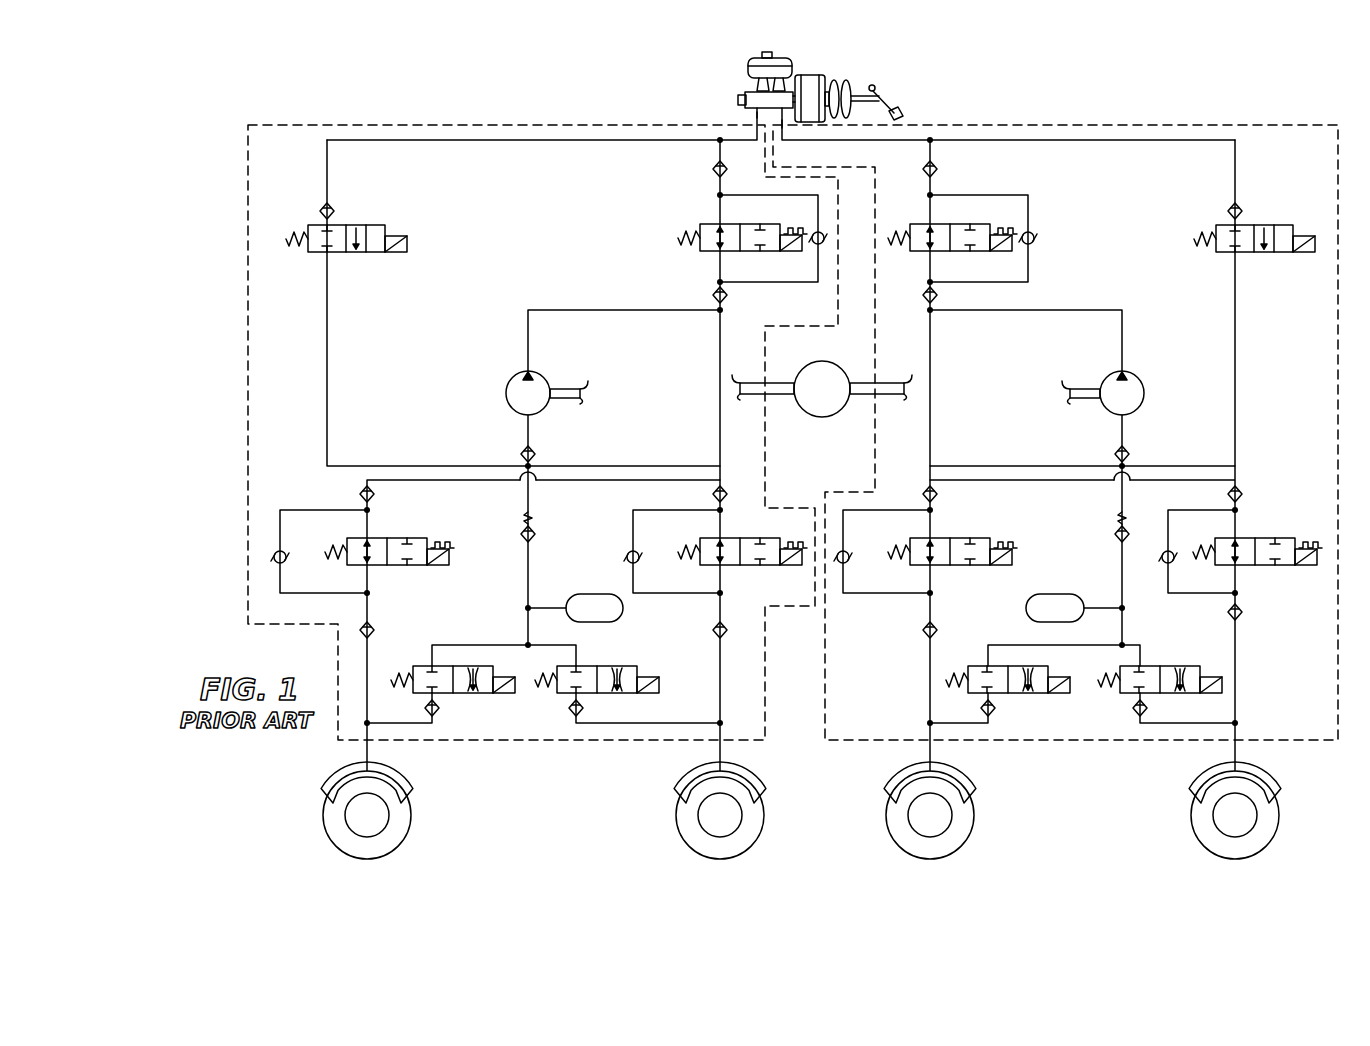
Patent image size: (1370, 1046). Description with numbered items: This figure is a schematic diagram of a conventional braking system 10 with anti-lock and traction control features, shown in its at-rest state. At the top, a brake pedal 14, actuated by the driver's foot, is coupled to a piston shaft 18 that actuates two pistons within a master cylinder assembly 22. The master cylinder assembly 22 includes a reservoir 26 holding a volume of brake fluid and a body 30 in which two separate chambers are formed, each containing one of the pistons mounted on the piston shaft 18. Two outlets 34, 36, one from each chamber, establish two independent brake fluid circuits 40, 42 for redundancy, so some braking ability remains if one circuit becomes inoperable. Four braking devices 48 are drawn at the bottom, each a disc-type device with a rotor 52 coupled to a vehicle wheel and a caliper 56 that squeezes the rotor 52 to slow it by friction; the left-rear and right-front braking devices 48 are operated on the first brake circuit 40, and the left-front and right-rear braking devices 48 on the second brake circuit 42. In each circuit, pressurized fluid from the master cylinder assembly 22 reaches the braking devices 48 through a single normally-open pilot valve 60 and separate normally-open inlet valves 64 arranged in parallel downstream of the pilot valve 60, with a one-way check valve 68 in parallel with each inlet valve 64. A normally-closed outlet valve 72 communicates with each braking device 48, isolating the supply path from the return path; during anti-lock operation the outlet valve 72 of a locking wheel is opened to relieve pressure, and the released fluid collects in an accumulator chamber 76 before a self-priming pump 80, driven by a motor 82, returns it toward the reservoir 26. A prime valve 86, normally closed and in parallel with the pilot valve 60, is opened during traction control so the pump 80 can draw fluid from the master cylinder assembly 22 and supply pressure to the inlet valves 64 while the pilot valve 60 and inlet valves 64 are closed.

The braking system 10 is at (190, 135).
The brake pedal 14 is at (900, 110).
The piston shaft 18 is at (866, 96).
The master cylinder assembly 22 is at (832, 80).
The reservoir 26 is at (762, 66).
The body 30 is at (750, 100).
The outlet 34 is at (762, 118).
The outlet 36 is at (782, 126).
The first brake circuit 40 is at (443, 122).
The second brake circuit 42 is at (1216, 122).
The braking device 48 is at (789, 807).
The rotor 52 is at (805, 807).
The caliper 56 is at (336, 781).
The pilot valve 60 is at (692, 224).
The inlet valve 64 is at (416, 533).
The one-way check valve 68 is at (278, 551).
The outlet valve 72 is at (550, 702).
The accumulator chamber 76 is at (593, 596).
The self-priming pump 80 is at (508, 380).
The motor 82 is at (822, 417).
The prime valve 86 is at (405, 214).